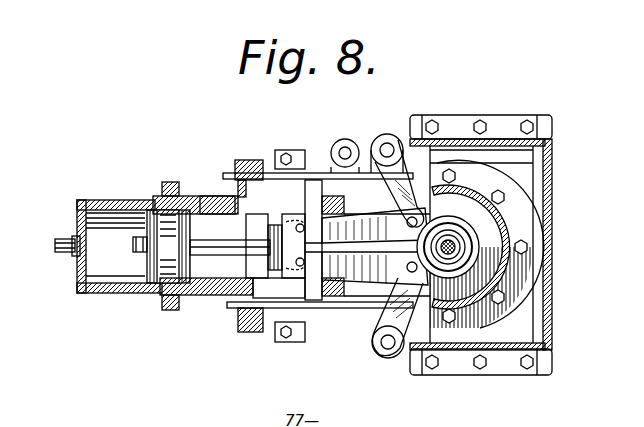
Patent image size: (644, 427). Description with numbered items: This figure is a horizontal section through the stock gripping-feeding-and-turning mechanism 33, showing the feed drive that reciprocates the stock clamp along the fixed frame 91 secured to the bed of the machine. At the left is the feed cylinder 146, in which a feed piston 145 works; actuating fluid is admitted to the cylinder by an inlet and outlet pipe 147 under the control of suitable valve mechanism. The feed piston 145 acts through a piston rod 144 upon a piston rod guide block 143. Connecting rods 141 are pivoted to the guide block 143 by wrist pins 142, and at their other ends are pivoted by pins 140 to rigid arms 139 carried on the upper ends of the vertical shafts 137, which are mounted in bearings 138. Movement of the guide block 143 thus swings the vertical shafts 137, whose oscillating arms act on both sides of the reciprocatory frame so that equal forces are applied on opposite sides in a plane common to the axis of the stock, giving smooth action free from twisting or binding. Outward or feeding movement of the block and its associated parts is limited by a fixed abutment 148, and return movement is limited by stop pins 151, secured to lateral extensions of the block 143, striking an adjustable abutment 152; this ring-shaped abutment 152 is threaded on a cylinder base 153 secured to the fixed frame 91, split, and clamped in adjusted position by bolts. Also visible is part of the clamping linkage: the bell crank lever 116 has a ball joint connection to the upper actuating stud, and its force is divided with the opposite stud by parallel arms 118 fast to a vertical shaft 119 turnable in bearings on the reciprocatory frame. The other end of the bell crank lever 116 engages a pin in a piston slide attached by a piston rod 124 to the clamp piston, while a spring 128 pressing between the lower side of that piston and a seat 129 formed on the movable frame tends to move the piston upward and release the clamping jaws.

The stock gripping-feeding-and-turning mechanism 33 is at (353, 325).
The fixed frame 91 is at (550, 176).
The bell crank lever 116 is at (391, 325).
The parallel arms 118 is at (337, 183).
The vertical shaft 119 is at (343, 140).
The piston rod 124 is at (462, 238).
The spring 128 is at (472, 248).
The seat 129 is at (466, 260).
The vertical shafts 137 is at (400, 160).
The bearings 138 is at (385, 135).
The rigid arms 139 is at (438, 126).
The pins 140 is at (505, 288).
The connecting rods 141 is at (368, 273).
The wrist pins 142 is at (305, 224).
The piston rod guide block 143 is at (288, 234).
The piston rod 144 is at (203, 195).
The feed piston 145 is at (160, 250).
The feed cylinder 146 is at (118, 292).
The inlet and outlet pipe 147 is at (62, 238).
The fixed abutment 148 is at (298, 290).
The stop pins 151 is at (232, 298).
The adjustable abutment 152 is at (160, 310).
The cylinder base 153 is at (207, 198).